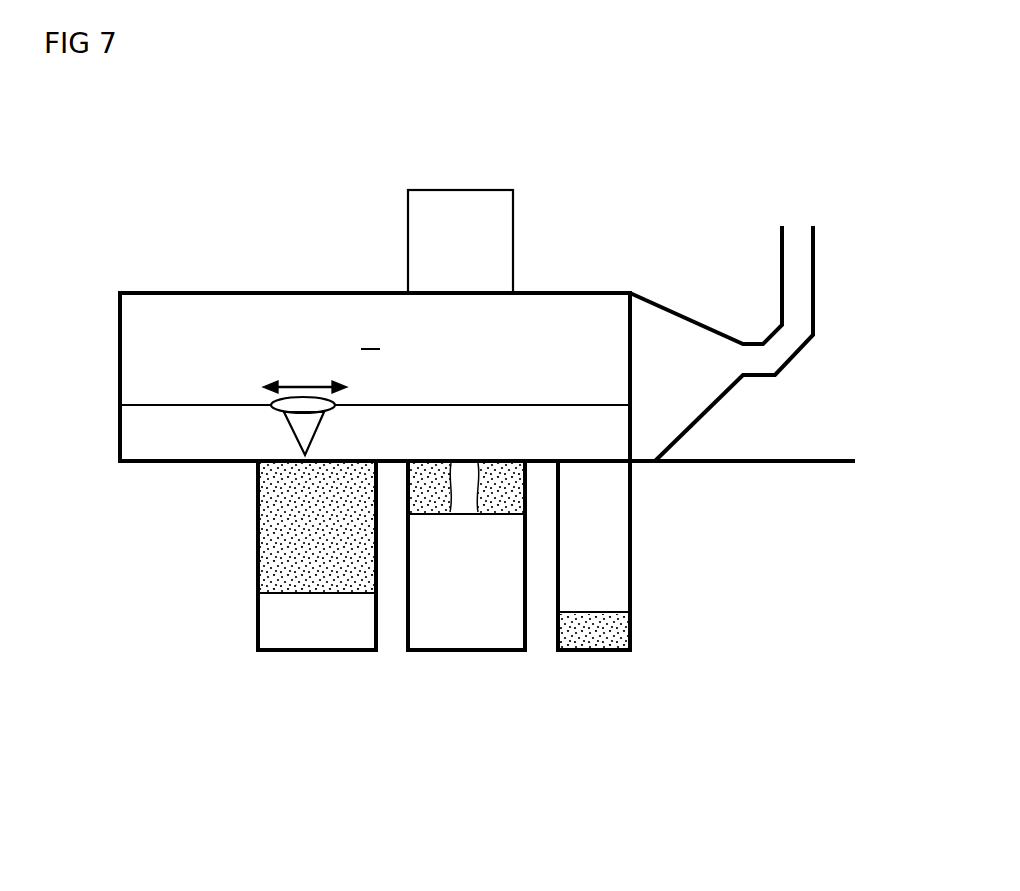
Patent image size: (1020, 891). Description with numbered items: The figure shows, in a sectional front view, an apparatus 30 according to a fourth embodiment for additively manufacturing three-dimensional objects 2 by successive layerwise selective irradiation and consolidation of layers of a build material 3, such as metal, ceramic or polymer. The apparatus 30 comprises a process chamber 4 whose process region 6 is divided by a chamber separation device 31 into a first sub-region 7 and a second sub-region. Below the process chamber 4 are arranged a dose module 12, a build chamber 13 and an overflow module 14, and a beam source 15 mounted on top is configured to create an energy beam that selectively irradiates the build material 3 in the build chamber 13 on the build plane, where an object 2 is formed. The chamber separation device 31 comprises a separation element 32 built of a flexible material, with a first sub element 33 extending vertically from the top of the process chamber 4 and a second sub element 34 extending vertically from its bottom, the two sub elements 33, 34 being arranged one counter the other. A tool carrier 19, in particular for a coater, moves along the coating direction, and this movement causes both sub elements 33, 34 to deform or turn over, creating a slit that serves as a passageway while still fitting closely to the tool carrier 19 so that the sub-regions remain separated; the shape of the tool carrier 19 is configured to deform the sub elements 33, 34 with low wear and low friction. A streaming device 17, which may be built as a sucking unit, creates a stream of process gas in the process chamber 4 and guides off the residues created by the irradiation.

The apparatus 30 is at (336, 146).
The beam source 15 is at (463, 190).
The process region 6 is at (251, 308).
The process chamber 4 is at (338, 292).
The first sub-region 7 is at (370, 335).
The streaming device 17 is at (699, 280).
The first sub element 33 is at (130, 332).
The separation element 32 is at (98, 398).
The second sub element 34 is at (130, 432).
The chamber separation device 31 is at (646, 389).
The tool carrier 19 is at (290, 420).
The build material 3 is at (270, 572).
The three-dimensional object 2 is at (463, 500).
The dose module 12 is at (315, 682).
The build chamber 13 is at (475, 682).
The overflow module 14 is at (595, 682).